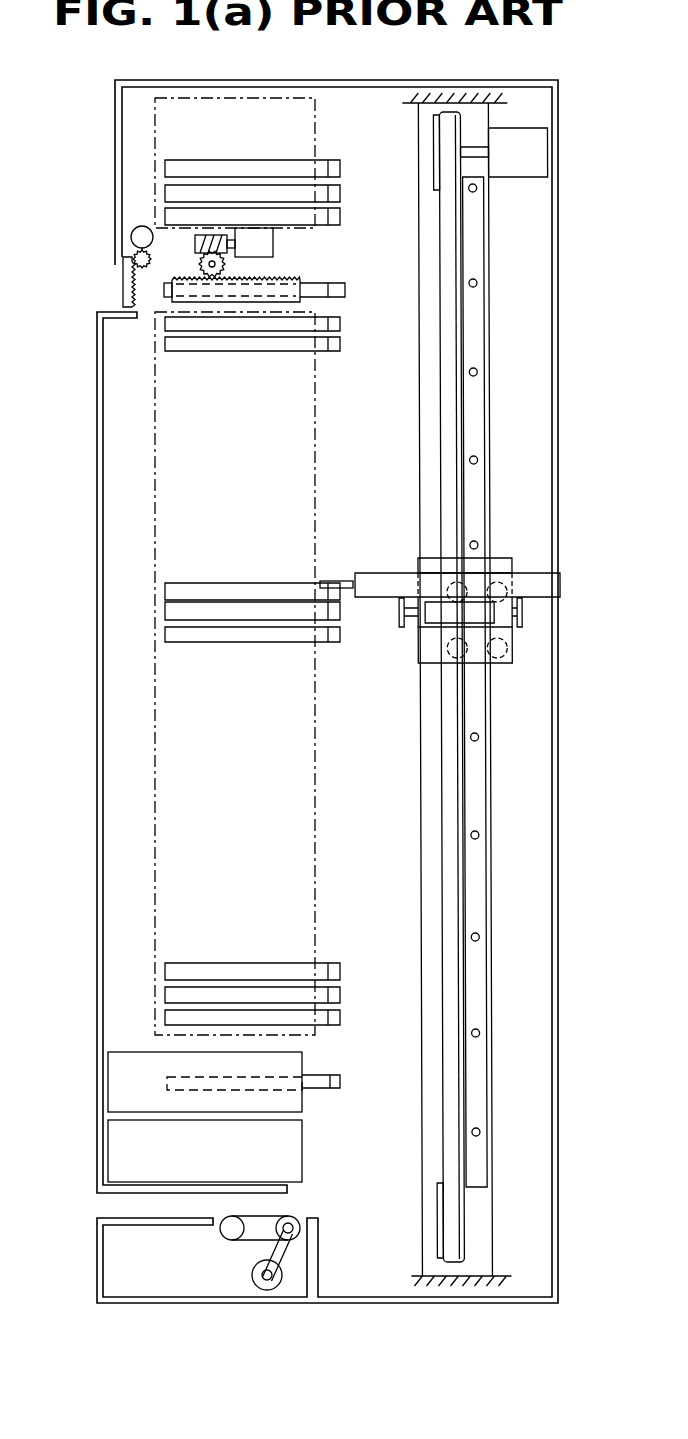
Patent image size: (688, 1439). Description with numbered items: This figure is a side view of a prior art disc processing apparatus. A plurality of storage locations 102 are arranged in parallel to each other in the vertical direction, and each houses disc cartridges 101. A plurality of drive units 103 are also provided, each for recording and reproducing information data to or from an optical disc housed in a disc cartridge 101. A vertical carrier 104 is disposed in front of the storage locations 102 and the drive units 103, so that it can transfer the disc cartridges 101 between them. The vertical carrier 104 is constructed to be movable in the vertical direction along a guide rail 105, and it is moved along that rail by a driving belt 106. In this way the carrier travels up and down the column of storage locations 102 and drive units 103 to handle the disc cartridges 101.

The disc cartridge 101 is at (252, 637).
The storage location 102 is at (167, 650).
The drive unit 103 is at (130, 1137).
The vertical carrier 104 is at (532, 580).
The guide rail 105 is at (477, 400).
The driving belt 106 is at (430, 410).